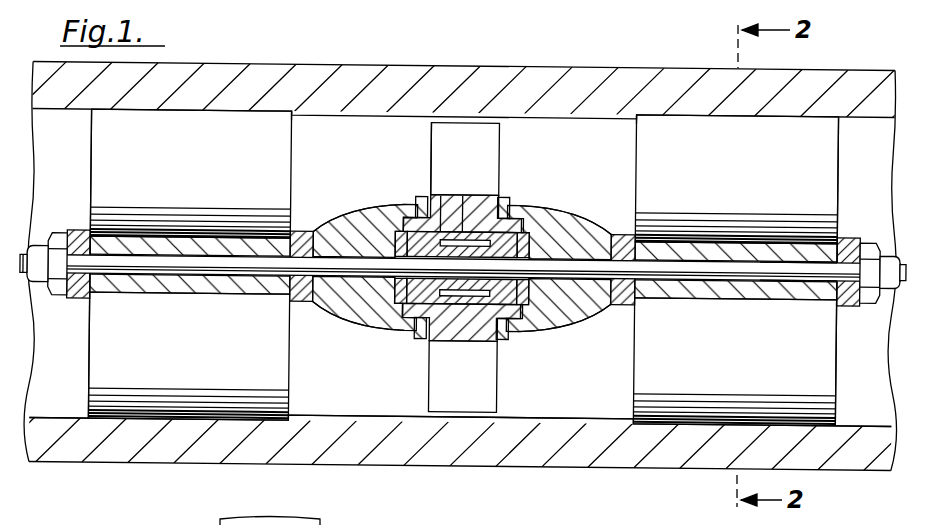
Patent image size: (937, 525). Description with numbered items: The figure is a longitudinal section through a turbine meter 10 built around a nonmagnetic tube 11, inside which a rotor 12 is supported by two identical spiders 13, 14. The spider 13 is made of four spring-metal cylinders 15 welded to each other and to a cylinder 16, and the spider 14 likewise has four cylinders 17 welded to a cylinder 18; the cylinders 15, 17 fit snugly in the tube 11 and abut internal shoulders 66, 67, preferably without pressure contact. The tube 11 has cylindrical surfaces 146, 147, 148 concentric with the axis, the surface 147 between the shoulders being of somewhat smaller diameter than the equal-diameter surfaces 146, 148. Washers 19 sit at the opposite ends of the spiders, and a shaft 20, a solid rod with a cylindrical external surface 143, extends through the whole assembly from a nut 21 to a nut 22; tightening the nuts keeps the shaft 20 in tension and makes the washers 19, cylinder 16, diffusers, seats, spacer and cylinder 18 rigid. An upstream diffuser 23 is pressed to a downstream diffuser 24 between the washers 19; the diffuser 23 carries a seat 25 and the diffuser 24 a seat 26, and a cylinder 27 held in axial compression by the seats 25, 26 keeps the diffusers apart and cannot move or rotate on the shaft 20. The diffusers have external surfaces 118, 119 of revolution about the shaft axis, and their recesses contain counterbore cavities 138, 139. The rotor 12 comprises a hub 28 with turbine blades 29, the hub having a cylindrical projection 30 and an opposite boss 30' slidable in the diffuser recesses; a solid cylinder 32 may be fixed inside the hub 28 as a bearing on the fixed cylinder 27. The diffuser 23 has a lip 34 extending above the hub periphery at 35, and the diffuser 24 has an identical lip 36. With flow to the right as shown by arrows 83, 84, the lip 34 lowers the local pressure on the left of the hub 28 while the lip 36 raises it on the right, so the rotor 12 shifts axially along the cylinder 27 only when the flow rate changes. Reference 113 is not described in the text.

The turbine meter 10 is at (630, 56).
The nonmagnetic tube 11 is at (422, 469).
The rotor 12 is at (506, 141).
The spider 13 is at (80, 313).
The spider 14 is at (846, 344).
The cylinders 15 is at (189, 264).
The cylinder 16 is at (167, 288).
The cylinders 17 is at (735, 270).
The cylinder 18 is at (660, 300).
The washers 19 is at (77, 231).
The shaft 20 is at (727, 281).
The nut 21 is at (60, 292).
The nut 22 is at (866, 298).
The upstream diffuser 23 is at (352, 332).
The downstream diffuser 24 is at (605, 213).
The seat 25 is at (393, 323).
The seat 26 is at (533, 319).
The cylinder 27 is at (567, 321).
The hub 28 is at (512, 189).
The turbine blades 29 is at (430, 136).
The cylindrical projection 30 is at (404, 193).
The boss 30' is at (473, 342).
The solid cylinder 32 is at (466, 334).
The lip 34 is at (414, 198).
The periphery of hub 35 is at (441, 196).
The lip 36 is at (511, 203).
The internal shoulder 66 is at (291, 118).
The internal shoulder 67 is at (650, 119).
The arrow 83 is at (72, 138).
The arrow 84 is at (72, 390).
The recess 113 is at (463, 198).
The external surface 118 is at (368, 329).
The external surface 119 is at (567, 335).
The cavity 138 is at (392, 238).
The cavity 139 is at (562, 213).
The cylindrical external surface 143 is at (817, 281).
The surface 146 is at (70, 413).
The surface 147 is at (525, 411).
The surface 148 is at (853, 417).